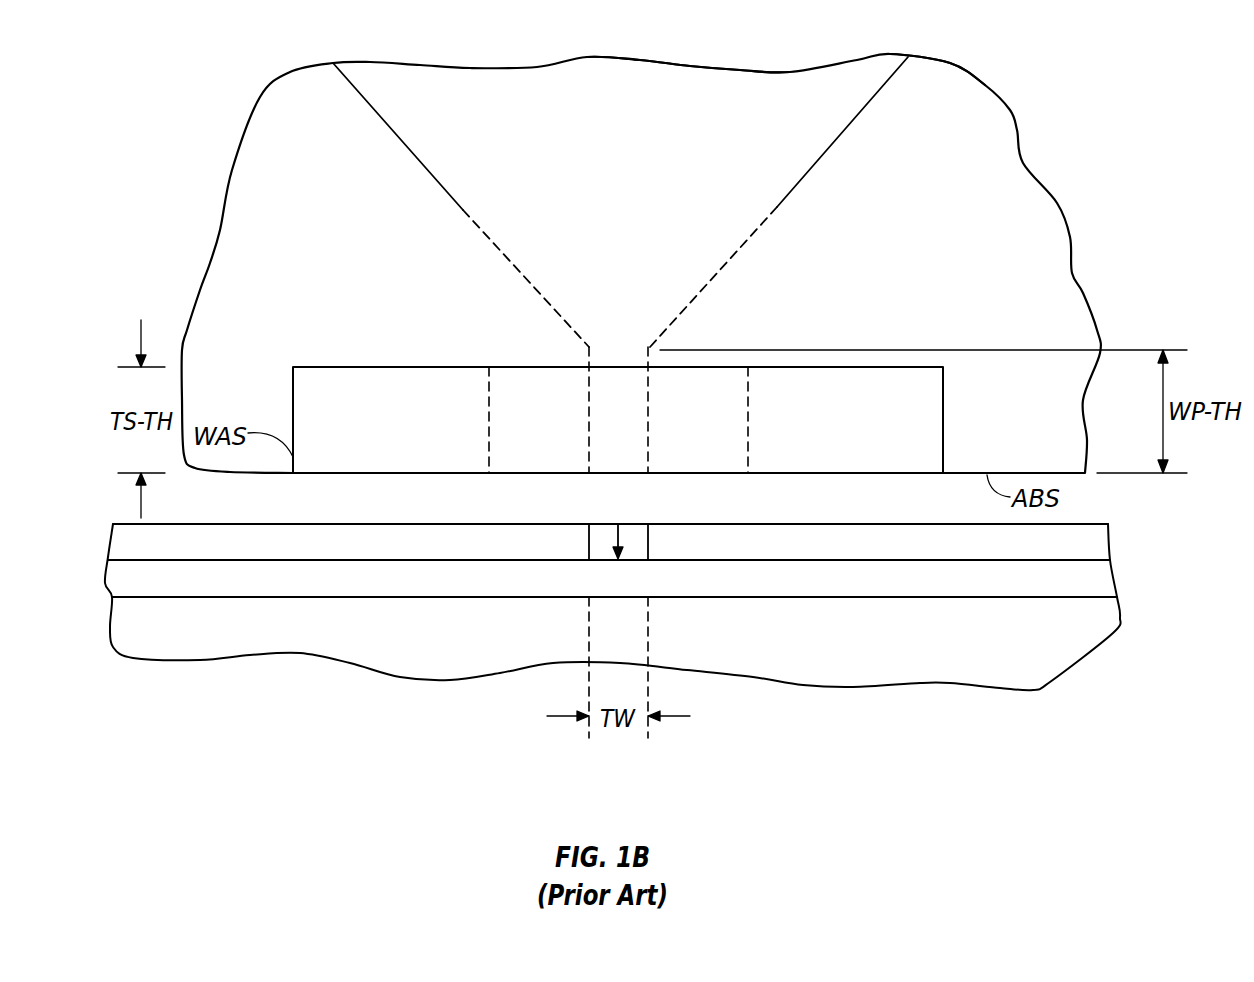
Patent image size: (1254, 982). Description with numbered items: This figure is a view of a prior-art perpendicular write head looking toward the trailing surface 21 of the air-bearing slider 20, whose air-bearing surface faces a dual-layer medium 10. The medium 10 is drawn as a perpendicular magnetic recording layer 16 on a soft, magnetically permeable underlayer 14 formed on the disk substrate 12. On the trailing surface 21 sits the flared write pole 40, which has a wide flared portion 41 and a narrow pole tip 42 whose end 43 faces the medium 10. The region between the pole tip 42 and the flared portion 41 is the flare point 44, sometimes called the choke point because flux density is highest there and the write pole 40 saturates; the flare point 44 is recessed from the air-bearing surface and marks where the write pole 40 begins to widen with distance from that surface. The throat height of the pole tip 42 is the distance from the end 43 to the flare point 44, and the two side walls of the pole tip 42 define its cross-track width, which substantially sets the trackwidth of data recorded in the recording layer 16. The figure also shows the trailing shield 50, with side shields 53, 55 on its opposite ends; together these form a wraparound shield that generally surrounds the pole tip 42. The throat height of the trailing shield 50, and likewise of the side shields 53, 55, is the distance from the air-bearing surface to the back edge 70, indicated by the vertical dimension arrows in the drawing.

The dual-layer medium 10 is at (1098, 663).
The disk substrate 12 is at (1108, 617).
The soft underlayer (SUL) 14 is at (1103, 582).
The recording layer (RL) 16 is at (1098, 545).
The air-bearing slider 20 is at (1017, 125).
The trailing surface 21 is at (947, 80).
The write pole (WP) 40 is at (687, 80).
The flared portion 41 is at (672, 285).
The pole tip 42 is at (608, 453).
The end 43 is at (618, 475).
The flare point 44 is at (585, 348).
The trailing shield (TS) 50 is at (705, 458).
The side shield 53 is at (857, 458).
The side shield 55 is at (408, 458).
The back edge 70 is at (852, 367).